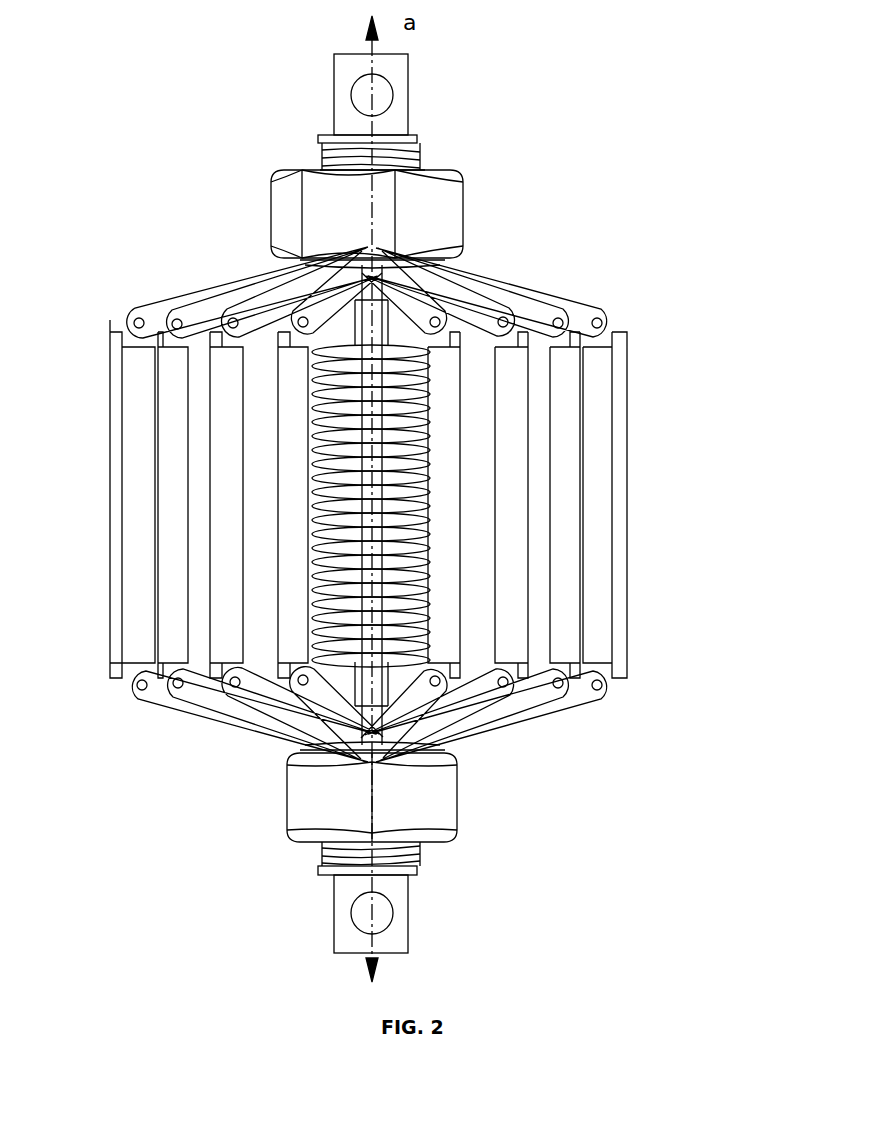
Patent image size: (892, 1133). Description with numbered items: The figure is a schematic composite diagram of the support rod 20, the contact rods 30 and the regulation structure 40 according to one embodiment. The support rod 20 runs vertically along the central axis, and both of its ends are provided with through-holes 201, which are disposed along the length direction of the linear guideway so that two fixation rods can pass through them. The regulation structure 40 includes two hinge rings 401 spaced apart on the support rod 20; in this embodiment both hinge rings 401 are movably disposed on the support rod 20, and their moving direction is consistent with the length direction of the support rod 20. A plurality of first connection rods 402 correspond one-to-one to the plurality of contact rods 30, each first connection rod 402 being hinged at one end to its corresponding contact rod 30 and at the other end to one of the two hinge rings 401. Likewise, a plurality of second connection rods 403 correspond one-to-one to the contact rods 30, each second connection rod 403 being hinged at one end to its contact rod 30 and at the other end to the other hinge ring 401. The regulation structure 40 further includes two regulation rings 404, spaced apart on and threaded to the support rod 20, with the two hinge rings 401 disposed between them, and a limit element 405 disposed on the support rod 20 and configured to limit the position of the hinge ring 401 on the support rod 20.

The through-hole 201 is at (382, 100).
The support rod 20 is at (417, 138).
The regulation ring 404 is at (378, 211).
The hinge ring 401 is at (530, 313).
The first connection rod 402 is at (600, 325).
The contact rod 30 is at (220, 426).
The limit element 405 is at (395, 472).
The regulation structure 40 is at (745, 250).
The second connection rod 403 is at (543, 692).